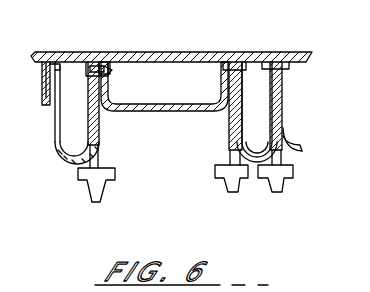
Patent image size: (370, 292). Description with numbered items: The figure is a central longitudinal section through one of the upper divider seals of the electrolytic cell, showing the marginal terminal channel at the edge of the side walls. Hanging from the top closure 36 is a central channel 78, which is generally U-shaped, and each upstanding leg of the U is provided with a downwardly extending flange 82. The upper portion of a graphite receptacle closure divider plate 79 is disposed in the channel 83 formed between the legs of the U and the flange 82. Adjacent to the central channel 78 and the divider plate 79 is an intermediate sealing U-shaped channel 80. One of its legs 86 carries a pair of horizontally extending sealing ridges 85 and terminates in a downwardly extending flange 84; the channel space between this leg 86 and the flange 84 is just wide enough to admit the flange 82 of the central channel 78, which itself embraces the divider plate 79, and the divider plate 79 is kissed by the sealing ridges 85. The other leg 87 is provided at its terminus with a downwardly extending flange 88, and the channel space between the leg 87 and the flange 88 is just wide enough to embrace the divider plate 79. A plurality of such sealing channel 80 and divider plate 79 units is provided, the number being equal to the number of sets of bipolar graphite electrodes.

The top closure 36 is at (223, 52).
The central channel 78 is at (158, 112).
The graphite receptacle closure divider plate 79 is at (106, 165).
The intermediate sealing U-shaped channel 80 is at (68, 160).
The downwardly extending flange 82 is at (93, 68).
The channel 83 is at (104, 66).
The downwardly extending flange 84 is at (109, 70).
The horizontally extending sealing ridges 85 is at (98, 92).
The leg 86 is at (88, 118).
The leg 87 is at (58, 148).
The downwardly extending flange 88 is at (47, 62).